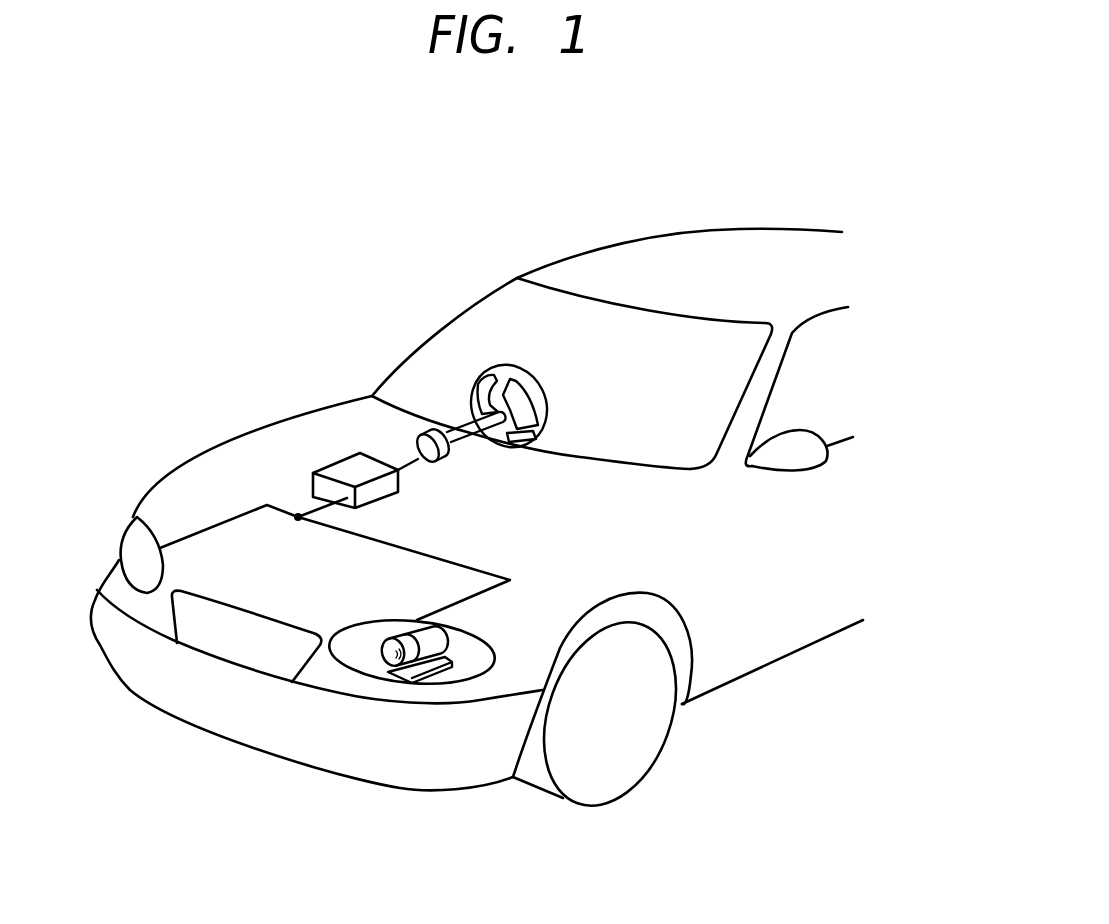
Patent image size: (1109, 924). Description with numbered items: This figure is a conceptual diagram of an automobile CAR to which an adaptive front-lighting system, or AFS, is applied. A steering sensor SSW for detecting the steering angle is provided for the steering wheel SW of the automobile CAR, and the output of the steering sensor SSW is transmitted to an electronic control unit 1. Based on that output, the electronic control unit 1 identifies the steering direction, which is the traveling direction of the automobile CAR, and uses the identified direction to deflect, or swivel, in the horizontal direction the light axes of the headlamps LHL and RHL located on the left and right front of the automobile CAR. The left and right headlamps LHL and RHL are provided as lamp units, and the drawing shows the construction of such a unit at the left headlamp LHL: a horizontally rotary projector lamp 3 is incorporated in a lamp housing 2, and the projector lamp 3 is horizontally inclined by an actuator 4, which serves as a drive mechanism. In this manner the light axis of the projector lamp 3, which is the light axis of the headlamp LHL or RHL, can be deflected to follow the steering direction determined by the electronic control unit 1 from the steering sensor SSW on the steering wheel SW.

The automobile CAR is at (633, 237).
The steering wheel SW is at (493, 364).
The steering sensor SSW is at (428, 433).
The electronic control unit 1 is at (350, 467).
The right headlamp RHL is at (122, 548).
The left headlamp LHL is at (377, 668).
The lamp housing 2 is at (450, 744).
The projector lamp 3 is at (428, 672).
The actuator 4 is at (445, 670).